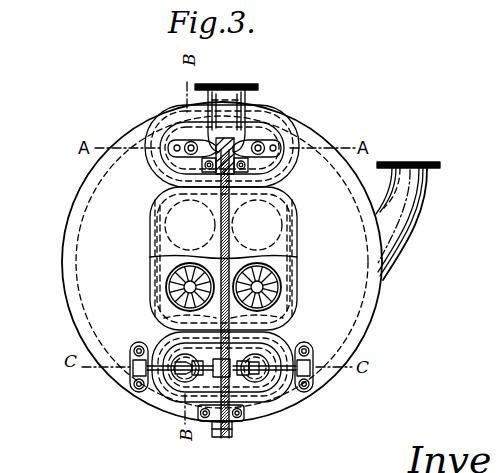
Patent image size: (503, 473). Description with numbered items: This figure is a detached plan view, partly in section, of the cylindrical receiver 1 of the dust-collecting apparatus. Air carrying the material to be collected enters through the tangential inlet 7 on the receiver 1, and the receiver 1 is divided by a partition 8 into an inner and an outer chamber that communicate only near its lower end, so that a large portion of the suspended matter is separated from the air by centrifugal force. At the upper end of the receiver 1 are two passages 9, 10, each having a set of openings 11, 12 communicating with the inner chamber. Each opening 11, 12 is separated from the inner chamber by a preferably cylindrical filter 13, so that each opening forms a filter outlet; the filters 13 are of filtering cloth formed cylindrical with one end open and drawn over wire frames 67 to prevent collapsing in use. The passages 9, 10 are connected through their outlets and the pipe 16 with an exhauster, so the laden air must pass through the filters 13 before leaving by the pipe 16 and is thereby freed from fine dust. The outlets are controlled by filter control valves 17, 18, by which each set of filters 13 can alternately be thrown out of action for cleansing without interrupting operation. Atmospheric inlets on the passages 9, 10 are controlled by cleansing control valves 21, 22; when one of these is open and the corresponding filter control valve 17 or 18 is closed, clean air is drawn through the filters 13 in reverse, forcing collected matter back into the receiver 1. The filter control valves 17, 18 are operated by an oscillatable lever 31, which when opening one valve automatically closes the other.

The cylindrical receiver 1 is at (78, 232).
The tangential inlet 7 is at (418, 220).
The partition 8 is at (163, 274).
The passage 9 is at (168, 186).
The passage 10 is at (278, 183).
The opening 11 is at (277, 240).
The opening 12 is at (160, 227).
The cylindrical filter 13 is at (177, 310).
The pipe 16 is at (250, 100).
The filter control valve 17 is at (182, 143).
The filter control valve 18 is at (273, 142).
The cleansing control valve 21 is at (170, 383).
The cleansing control valve 22 is at (277, 390).
The oscillatable lever 31 is at (233, 142).
The wire frame 67 is at (270, 270).